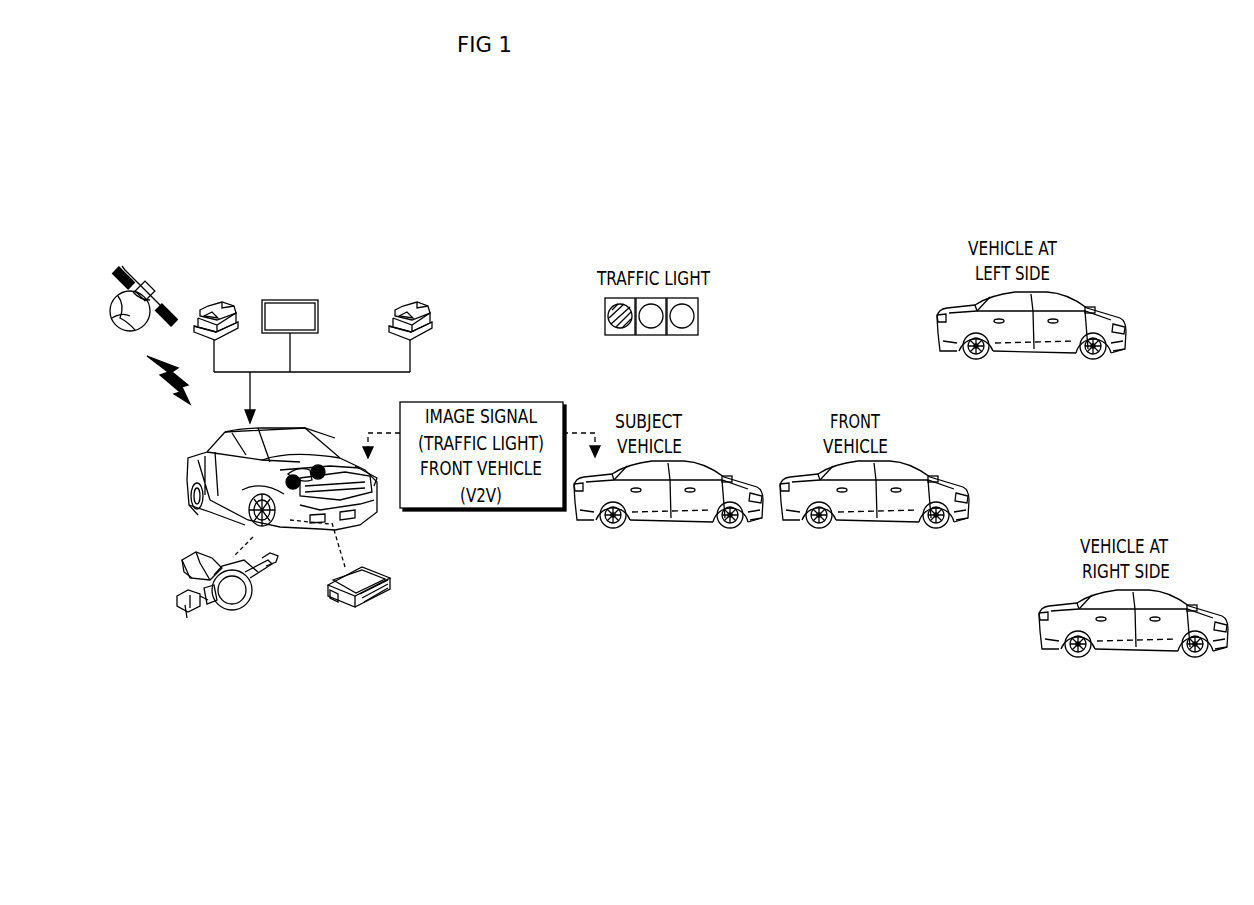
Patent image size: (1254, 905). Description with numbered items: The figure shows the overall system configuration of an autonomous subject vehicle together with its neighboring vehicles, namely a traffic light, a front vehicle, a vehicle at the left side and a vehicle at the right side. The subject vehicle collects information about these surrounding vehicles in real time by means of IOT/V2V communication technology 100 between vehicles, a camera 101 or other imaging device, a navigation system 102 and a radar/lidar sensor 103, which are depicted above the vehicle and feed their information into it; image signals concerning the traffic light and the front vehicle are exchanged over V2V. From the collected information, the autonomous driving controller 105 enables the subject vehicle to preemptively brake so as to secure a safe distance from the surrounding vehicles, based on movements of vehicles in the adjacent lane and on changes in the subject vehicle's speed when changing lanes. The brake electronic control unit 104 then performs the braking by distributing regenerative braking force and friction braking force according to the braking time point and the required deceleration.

The IOT/V2V communication 100 is at (150, 335).
The camera 101 is at (216, 320).
The navigation system 102 is at (290, 320).
The radar/lidar sensor 103 is at (410, 320).
The brake electronic control unit 104 is at (227, 593).
The autonomous driving controller 105 is at (359, 582).